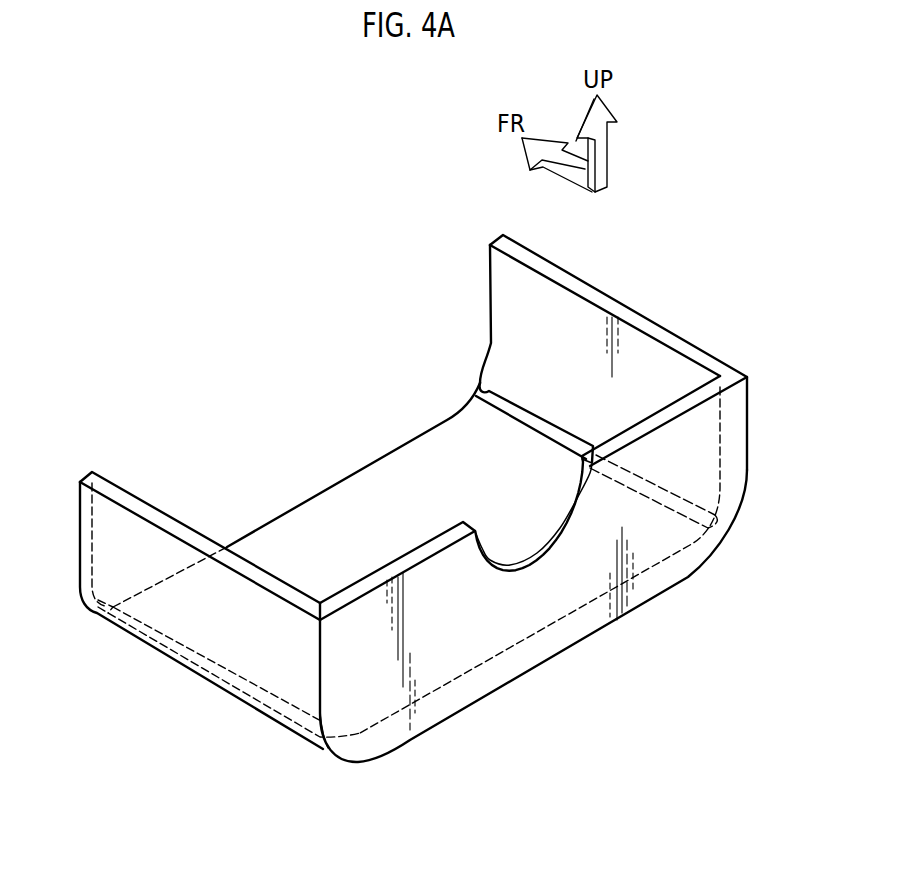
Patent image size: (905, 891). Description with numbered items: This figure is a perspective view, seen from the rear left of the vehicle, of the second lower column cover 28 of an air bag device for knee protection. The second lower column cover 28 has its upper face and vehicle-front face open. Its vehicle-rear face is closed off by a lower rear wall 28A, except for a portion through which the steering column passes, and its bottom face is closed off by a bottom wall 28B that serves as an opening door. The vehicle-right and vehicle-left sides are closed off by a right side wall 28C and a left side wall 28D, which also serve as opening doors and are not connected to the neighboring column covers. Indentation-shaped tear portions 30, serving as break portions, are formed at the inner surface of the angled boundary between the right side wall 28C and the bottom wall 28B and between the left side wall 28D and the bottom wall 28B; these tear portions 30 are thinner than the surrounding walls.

The second lower column cover 28 is at (710, 293).
The lower rear wall 28A is at (472, 648).
The bottom wall 28B is at (343, 498).
The right side wall 28C is at (607, 293).
The left side wall 28D is at (177, 518).
The tear portions 30 is at (541, 422).